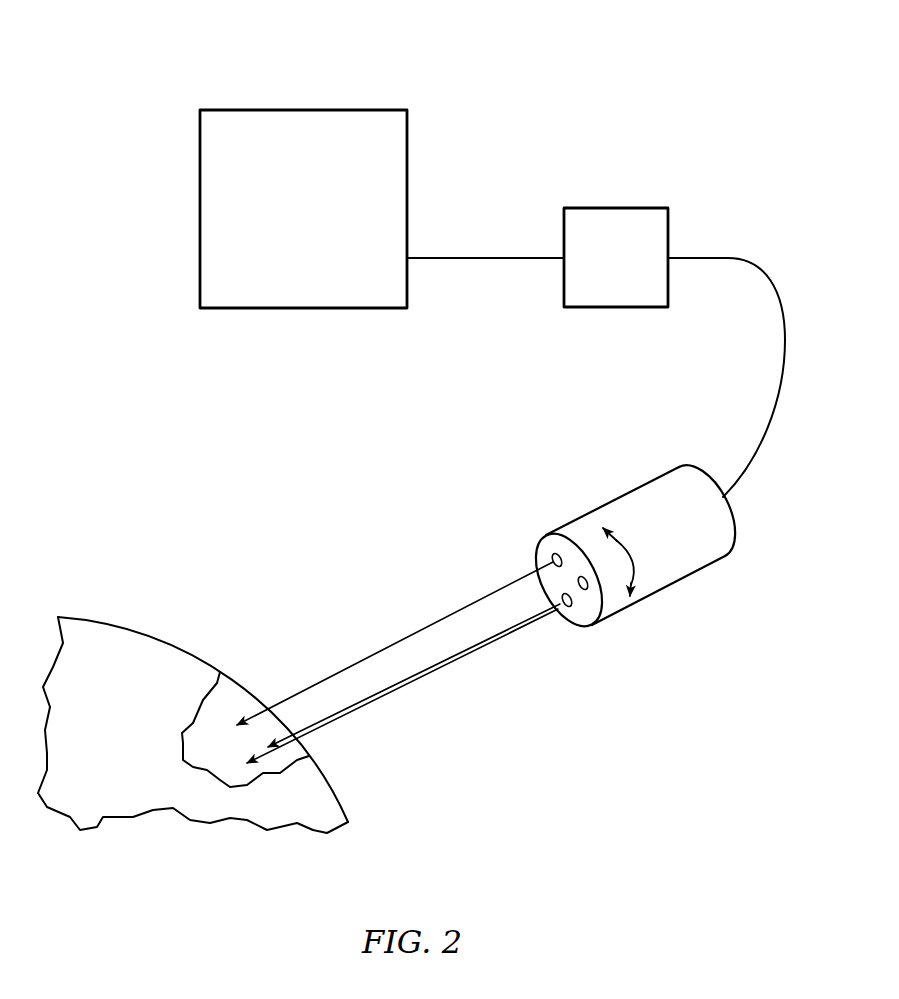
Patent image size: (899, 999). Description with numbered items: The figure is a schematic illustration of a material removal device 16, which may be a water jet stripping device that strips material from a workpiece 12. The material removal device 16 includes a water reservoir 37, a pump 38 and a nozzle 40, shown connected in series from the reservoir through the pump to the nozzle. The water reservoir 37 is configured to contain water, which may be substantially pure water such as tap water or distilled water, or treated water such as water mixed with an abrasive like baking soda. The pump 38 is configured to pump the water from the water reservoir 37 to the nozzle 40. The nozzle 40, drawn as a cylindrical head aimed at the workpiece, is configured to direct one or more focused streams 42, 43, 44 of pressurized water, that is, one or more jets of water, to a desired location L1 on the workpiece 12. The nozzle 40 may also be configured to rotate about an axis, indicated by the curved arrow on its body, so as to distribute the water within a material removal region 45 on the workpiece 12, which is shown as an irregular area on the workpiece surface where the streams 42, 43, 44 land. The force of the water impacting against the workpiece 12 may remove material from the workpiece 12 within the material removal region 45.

The material removal device 16 is at (128, 63).
The water reservoir 37 is at (279, 220).
The pump 38 is at (602, 270).
The nozzle 40 is at (673, 583).
The focused stream 42 is at (422, 671).
The focused stream 43 is at (468, 654).
The focused stream 44 is at (438, 620).
The material removal region 45 is at (230, 700).
The workpiece 12 is at (203, 823).
The location L1 is at (218, 743).